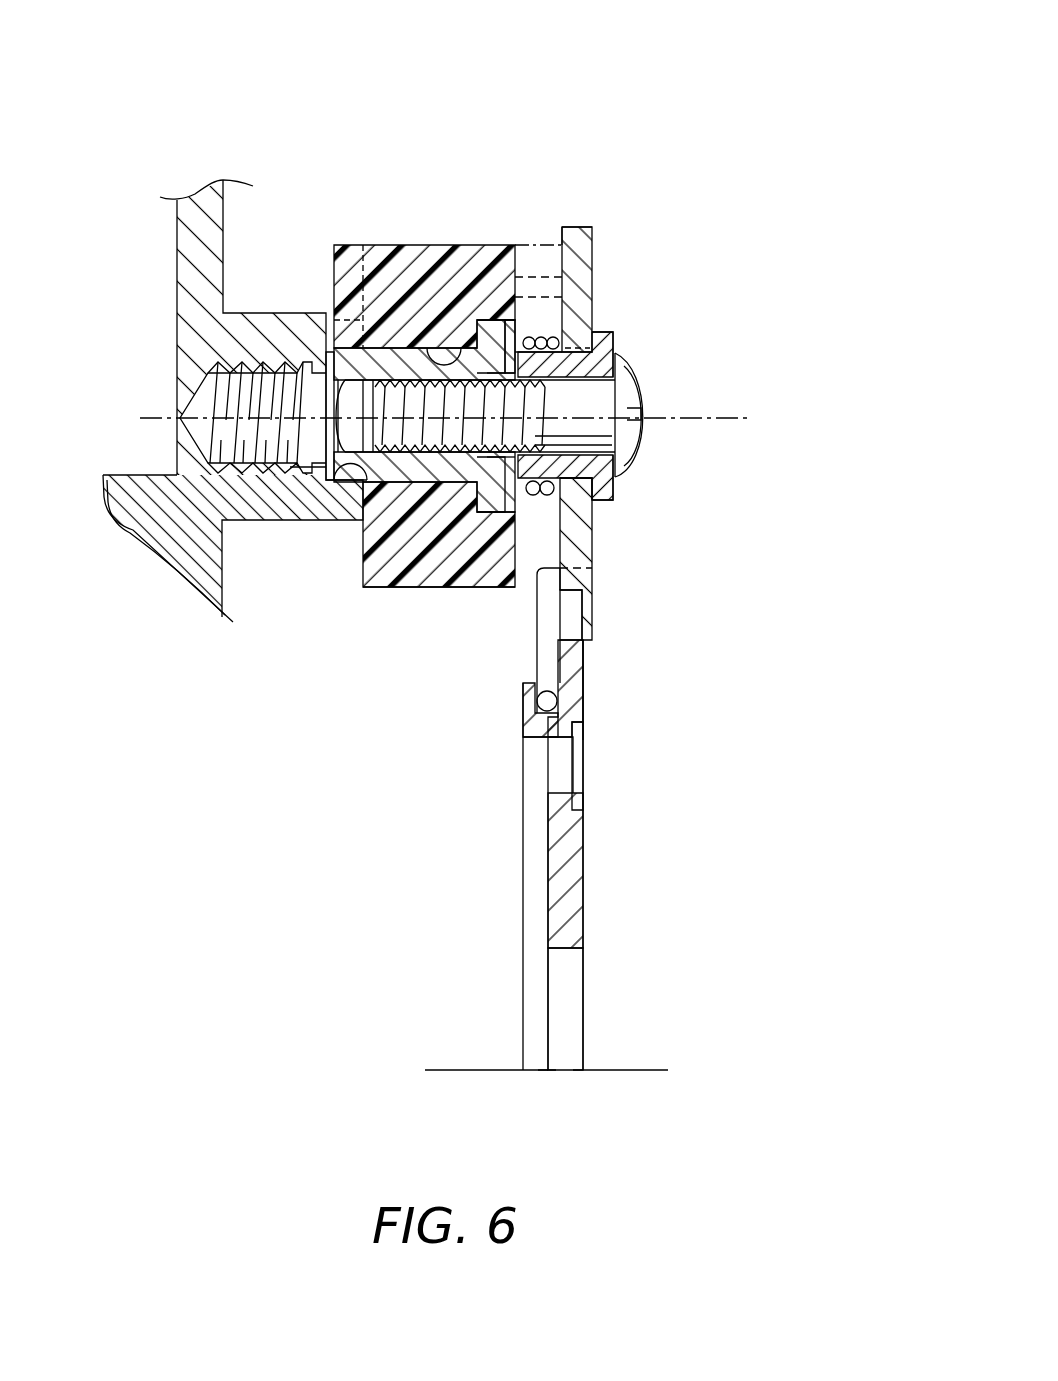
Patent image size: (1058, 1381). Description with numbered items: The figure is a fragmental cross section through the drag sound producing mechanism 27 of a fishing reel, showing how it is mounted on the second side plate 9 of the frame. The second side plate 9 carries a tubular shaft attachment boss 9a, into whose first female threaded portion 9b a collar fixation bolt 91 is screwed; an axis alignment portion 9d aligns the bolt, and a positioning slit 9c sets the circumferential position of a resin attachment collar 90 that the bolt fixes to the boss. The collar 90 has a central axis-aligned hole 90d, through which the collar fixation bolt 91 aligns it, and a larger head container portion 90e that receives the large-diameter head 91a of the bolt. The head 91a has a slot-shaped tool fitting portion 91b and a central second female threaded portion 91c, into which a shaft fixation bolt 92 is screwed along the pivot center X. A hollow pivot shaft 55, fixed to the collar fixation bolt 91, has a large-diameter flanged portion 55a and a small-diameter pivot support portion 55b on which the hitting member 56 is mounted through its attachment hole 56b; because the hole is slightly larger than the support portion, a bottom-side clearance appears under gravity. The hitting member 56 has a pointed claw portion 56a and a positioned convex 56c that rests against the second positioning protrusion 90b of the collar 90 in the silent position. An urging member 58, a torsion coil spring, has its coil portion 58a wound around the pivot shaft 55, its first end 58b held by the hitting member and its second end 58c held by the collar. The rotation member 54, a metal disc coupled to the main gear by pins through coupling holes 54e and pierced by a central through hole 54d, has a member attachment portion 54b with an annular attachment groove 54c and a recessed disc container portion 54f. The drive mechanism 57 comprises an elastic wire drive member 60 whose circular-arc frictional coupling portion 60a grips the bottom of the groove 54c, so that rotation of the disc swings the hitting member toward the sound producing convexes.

The second side plate 9 is at (194, 276).
The shaft attachment boss 9a is at (260, 527).
The first female threaded portion 9b is at (300, 352).
The positioning slit 9c is at (340, 348).
The axis alignment portion 9d is at (375, 470).
The drag sound producing mechanism 27 is at (607, 195).
The rotation member 54 is at (595, 862).
The member attachment portion 54b is at (529, 682).
The annular attachment groove 54c is at (586, 686).
The through hole 54d is at (560, 950).
The coupling holes 54e is at (586, 760).
The disc container portion 54f is at (520, 745).
The pivot shaft 55 is at (603, 340).
The large-diameter flanged portion 55a is at (608, 352).
The small-diameter pivot support portion 55b is at (556, 490).
The hitting member 56 is at (597, 561).
The claw portion 56a is at (592, 636).
The attachment hole 56b is at (614, 470).
The positioned convex 56c is at (597, 230).
The drive mechanism 57 is at (566, 658).
The urging member 58 is at (575, 335).
The coil portion 58a is at (562, 500).
The first end 58b is at (560, 341).
The second end 58c is at (505, 328).
The drive member 60 is at (568, 611).
The frictional coupling portion 60a is at (550, 705).
The attachment collar 90 is at (388, 600).
The second positioning protrusion 90b is at (538, 300).
The axis-aligned hole 90d is at (462, 340).
The head container portion 90e is at (500, 515).
The collar fixation bolt 91 is at (398, 344).
The head 91a is at (443, 590).
The tool fitting portion 91b is at (542, 262).
The second female threaded portion 91c is at (385, 592).
The shaft fixation bolt 92 is at (632, 402).
The pivot center X is at (665, 412).